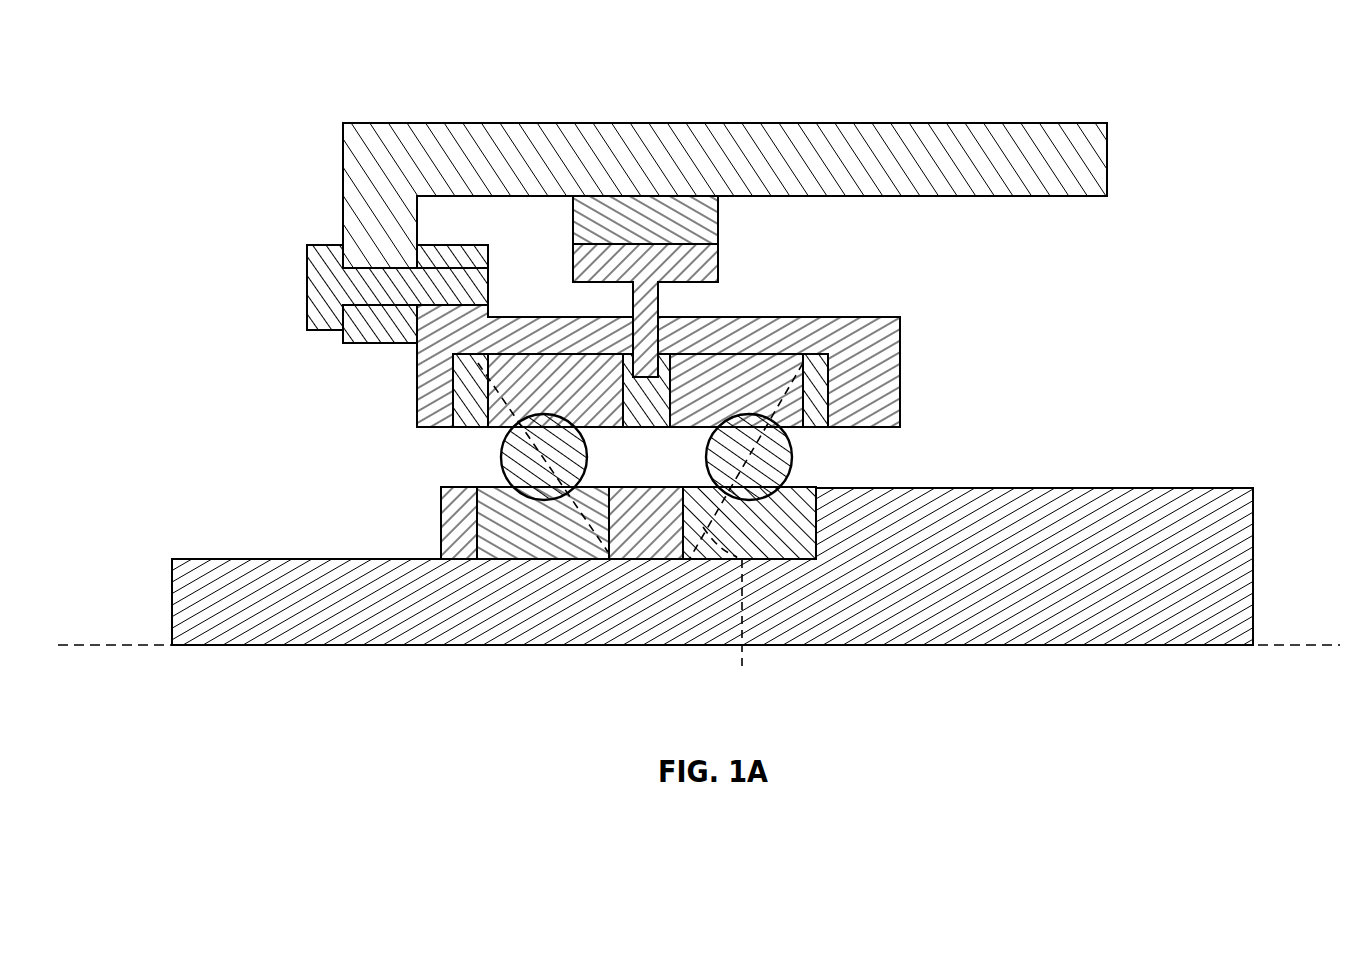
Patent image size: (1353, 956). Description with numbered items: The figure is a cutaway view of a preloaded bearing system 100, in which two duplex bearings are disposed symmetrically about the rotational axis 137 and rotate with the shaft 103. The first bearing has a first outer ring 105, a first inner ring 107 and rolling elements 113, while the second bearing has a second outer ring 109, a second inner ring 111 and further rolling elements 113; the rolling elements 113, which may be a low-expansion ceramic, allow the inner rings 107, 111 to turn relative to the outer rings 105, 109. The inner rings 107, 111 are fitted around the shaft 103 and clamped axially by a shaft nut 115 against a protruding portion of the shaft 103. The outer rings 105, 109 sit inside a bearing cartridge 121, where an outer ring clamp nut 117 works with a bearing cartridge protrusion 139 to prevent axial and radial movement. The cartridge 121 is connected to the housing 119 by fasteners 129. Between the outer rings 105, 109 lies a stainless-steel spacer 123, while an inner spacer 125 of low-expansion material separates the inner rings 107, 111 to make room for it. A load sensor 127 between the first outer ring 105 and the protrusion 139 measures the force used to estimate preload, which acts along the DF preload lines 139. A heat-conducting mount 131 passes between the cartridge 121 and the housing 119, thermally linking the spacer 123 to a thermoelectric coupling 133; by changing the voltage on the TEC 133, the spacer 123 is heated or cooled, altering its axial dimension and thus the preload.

The preloaded bearing system 100 is at (214, 66).
The shaft 103 is at (1148, 503).
The first outer ring 105 is at (786, 360).
The first inner ring 107 is at (803, 488).
The second outer ring 109 is at (493, 412).
The second inner ring 111 is at (485, 523).
The rolling elements 113 is at (510, 462).
The shaft nut 115 is at (453, 543).
The outer ring clamp nut 117 is at (465, 393).
The housing 119 is at (1092, 168).
The bearing cartridge 121 is at (867, 332).
The spacer 123 is at (627, 375).
The inner spacer 125 is at (635, 545).
The load sensor 127 is at (823, 375).
The fasteners 129 is at (305, 315).
The heat-conducting mount 131 is at (720, 262).
The thermoelectric coupling (TEC) 133 is at (643, 215).
The rotational axis 137 is at (125, 643).
The DF preload lines / bearing cartridge protrusion 139 is at (887, 415).